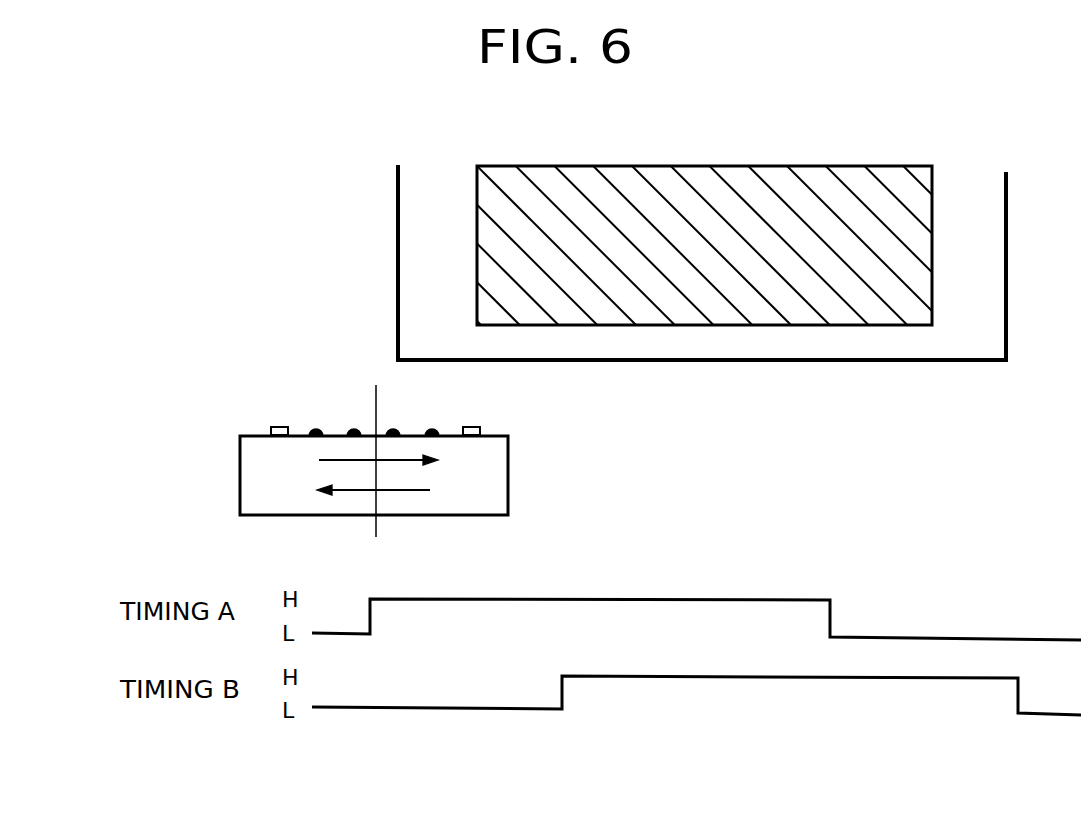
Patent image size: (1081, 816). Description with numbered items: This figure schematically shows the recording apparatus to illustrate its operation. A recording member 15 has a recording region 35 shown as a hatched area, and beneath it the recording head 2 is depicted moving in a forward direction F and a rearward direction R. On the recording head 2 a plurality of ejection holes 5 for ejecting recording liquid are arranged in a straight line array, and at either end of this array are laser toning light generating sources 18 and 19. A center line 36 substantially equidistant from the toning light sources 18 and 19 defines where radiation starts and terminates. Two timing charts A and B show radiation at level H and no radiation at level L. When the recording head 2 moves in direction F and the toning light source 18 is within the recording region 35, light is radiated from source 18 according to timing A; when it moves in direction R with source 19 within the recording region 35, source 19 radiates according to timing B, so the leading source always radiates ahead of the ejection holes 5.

The recording member 15 is at (398, 226).
The recording region 35 is at (829, 185).
The recording head 2 is at (240, 446).
The ejection holes 5 is at (316, 428).
The toning light generating source 19 is at (280, 427).
The toning light generating source 18 is at (480, 427).
The center line 36 is at (376, 500).